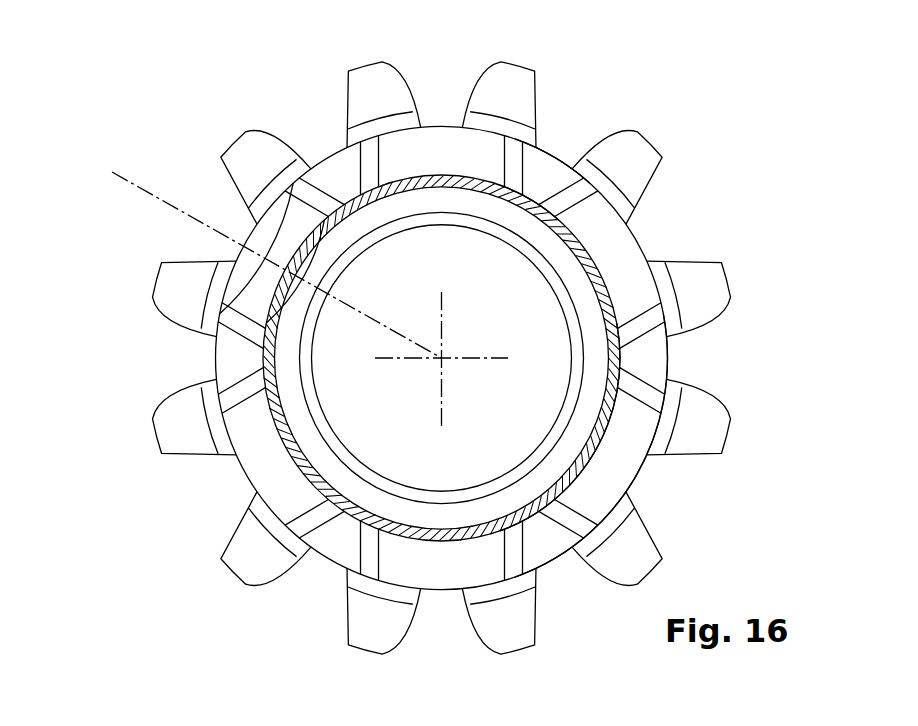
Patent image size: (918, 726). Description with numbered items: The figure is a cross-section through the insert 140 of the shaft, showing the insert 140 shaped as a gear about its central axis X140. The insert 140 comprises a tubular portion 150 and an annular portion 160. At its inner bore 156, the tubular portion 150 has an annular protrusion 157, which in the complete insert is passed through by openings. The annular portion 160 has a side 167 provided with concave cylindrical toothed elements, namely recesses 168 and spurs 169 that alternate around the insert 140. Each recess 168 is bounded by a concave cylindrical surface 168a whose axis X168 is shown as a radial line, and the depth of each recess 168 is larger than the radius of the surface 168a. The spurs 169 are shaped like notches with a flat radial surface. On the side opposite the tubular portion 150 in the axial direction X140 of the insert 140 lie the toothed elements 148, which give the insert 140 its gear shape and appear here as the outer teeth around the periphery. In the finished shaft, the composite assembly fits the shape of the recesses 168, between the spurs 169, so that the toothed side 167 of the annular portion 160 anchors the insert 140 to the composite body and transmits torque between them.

The insert 140 is at (747, 200).
The toothed elements 148 is at (665, 141).
The tubular portion 150 is at (442, 182).
The bore 156 is at (447, 189).
The annular protrusion 157 is at (556, 281).
The annular portion 160 is at (548, 183).
The side 167 is at (655, 368).
The recess 168 is at (632, 476).
The concave cylindrical surface 168a is at (283, 230).
The spurs 169 is at (546, 543).
The central axis X140 is at (441, 360).
The axis X168 is at (246, 255).